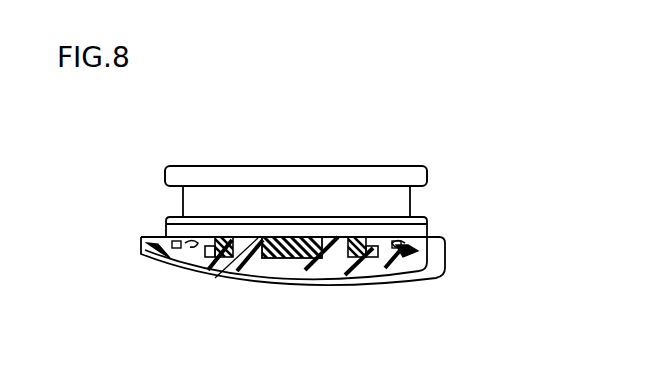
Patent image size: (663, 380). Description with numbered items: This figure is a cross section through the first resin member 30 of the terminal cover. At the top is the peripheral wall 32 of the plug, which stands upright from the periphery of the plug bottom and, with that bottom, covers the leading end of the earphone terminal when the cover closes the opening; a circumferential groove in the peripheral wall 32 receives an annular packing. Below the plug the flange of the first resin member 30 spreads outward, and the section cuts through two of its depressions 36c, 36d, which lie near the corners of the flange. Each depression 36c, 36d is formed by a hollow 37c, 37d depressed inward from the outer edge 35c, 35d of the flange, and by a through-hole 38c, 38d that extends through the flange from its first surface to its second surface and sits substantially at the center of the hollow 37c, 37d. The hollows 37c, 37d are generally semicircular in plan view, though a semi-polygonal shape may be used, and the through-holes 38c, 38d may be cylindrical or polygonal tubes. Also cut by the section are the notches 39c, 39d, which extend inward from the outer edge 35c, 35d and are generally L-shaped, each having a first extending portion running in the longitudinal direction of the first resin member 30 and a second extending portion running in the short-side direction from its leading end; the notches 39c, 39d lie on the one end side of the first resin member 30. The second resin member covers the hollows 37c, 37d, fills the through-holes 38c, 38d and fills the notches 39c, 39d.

The first resin member 30 is at (413, 133).
The peripheral wall 32 is at (307, 175).
The outer edge 35c is at (178, 247).
The fixed contact 35d is at (400, 247).
The depression 36c is at (172, 241).
The depression 36d is at (398, 243).
The hollow 37c is at (212, 246).
The hollow 37d is at (370, 247).
The through-hole 38c is at (190, 242).
The through-hole 38d is at (396, 242).
The notch 39c is at (258, 245).
The notch 39d is at (322, 246).